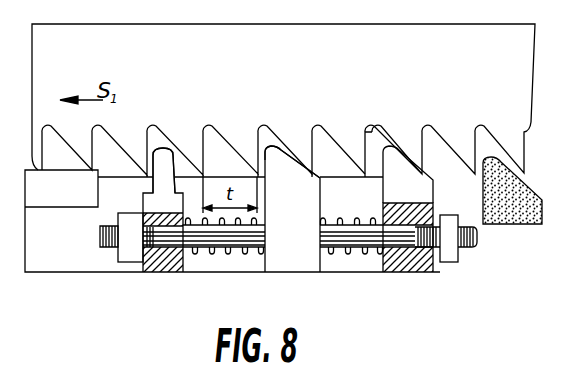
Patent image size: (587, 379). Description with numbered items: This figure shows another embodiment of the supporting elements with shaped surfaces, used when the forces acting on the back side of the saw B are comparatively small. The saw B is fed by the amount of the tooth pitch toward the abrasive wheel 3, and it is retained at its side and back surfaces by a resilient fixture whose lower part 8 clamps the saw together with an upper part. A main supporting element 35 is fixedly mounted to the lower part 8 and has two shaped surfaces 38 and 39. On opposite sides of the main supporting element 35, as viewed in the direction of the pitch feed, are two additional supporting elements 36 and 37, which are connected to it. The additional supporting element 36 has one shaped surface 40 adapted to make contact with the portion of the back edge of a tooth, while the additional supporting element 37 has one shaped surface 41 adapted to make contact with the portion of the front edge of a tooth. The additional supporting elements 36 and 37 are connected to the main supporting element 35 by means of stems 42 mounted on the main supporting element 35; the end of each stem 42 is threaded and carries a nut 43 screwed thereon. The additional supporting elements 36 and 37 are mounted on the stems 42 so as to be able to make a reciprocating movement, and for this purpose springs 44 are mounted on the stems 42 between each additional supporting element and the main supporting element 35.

The saw B is at (481, 41).
The abrasive wheel 3 is at (525, 224).
The lower part 8 is at (70, 262).
The main supporting element 35 is at (302, 281).
The additional supporting element 36 is at (403, 281).
The additional supporting element 37 is at (163, 281).
The shaped surface 38 is at (309, 163).
The shaped surface 39 is at (266, 152).
The shaped surface 40 is at (391, 150).
The shaped surface 41 is at (148, 150).
The stem 42 is at (378, 240).
The nut 43 is at (452, 246).
The spring 44 is at (347, 259).